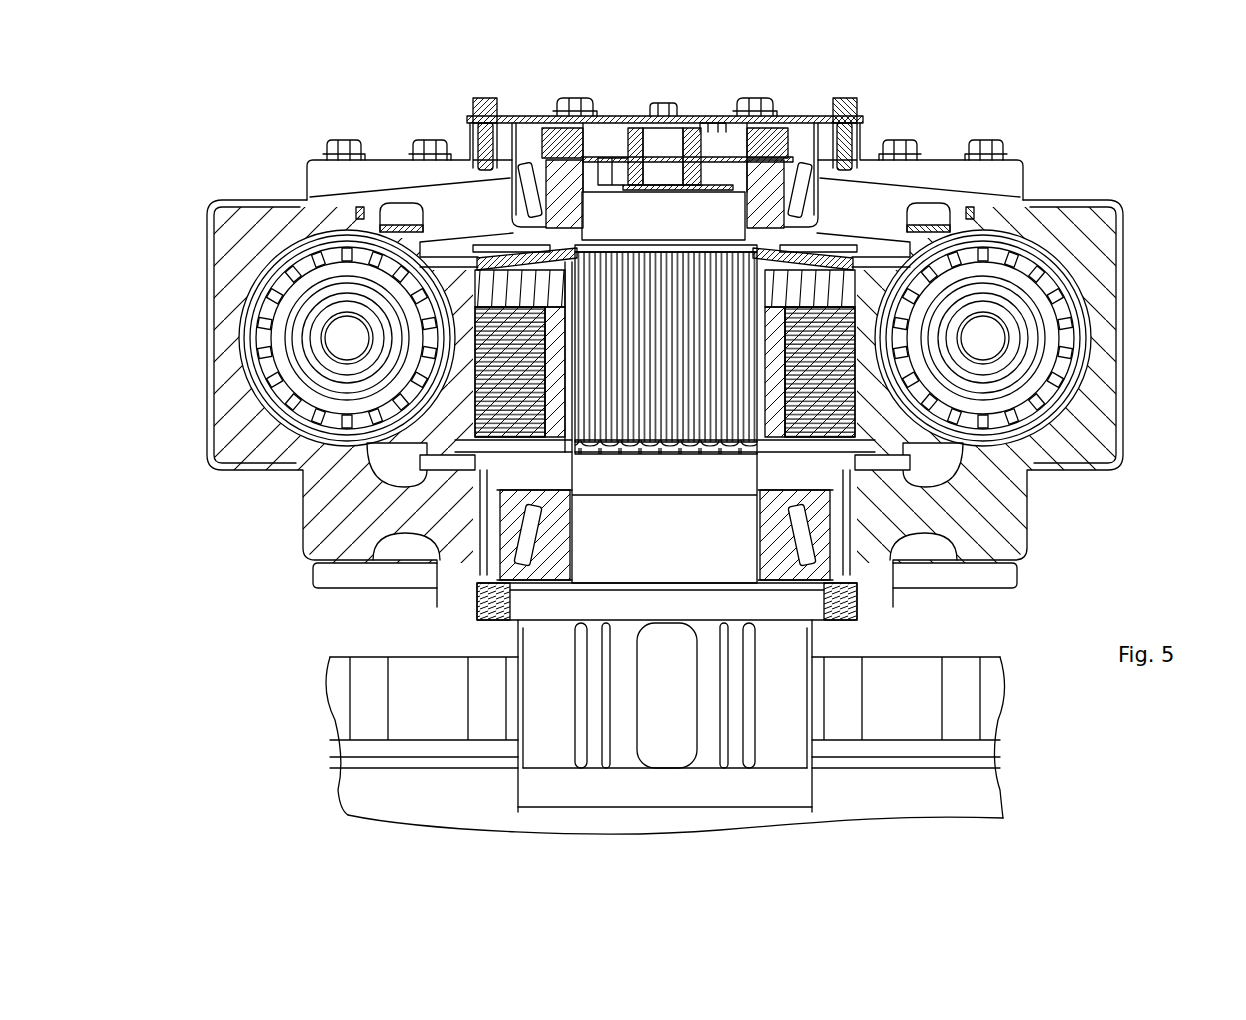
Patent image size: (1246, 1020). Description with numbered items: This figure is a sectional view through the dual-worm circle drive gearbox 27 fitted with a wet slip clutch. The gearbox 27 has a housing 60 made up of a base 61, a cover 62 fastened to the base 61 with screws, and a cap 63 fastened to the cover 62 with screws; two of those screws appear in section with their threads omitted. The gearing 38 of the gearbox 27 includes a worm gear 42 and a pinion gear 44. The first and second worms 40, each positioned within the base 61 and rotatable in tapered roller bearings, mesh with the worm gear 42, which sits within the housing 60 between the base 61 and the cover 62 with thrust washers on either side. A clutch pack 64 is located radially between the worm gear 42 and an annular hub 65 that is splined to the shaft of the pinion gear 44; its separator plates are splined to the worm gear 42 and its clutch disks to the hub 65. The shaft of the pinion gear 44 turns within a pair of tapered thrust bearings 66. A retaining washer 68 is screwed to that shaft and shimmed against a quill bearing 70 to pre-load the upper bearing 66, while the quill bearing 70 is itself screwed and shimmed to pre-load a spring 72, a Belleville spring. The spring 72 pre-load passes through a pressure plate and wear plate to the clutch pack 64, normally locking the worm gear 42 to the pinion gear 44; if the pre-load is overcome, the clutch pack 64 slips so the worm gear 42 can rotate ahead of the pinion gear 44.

The dual-worm circle drive gearbox 27 is at (245, 168).
The gearing 38 is at (880, 235).
The worm 40 is at (288, 338).
The worm gear 42 is at (453, 447).
The pinion gear 44 is at (797, 783).
The housing 60 is at (1080, 462).
The base 61 is at (232, 235).
The cover 62 is at (398, 175).
The cap 63 is at (470, 120).
The clutch pack 64 is at (553, 453).
The annular hub 65 is at (573, 462).
The tapered thrust bearing 66 is at (582, 214).
The retaining washer 68 is at (541, 142).
The quill bearing 70 is at (637, 176).
The spring 72 is at (522, 256).